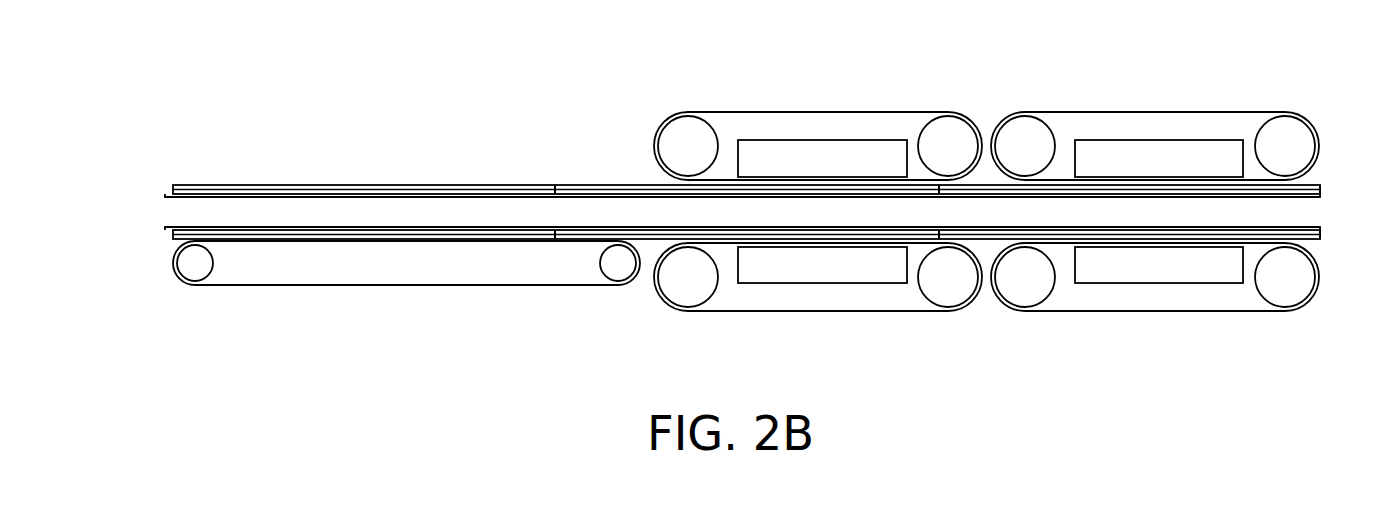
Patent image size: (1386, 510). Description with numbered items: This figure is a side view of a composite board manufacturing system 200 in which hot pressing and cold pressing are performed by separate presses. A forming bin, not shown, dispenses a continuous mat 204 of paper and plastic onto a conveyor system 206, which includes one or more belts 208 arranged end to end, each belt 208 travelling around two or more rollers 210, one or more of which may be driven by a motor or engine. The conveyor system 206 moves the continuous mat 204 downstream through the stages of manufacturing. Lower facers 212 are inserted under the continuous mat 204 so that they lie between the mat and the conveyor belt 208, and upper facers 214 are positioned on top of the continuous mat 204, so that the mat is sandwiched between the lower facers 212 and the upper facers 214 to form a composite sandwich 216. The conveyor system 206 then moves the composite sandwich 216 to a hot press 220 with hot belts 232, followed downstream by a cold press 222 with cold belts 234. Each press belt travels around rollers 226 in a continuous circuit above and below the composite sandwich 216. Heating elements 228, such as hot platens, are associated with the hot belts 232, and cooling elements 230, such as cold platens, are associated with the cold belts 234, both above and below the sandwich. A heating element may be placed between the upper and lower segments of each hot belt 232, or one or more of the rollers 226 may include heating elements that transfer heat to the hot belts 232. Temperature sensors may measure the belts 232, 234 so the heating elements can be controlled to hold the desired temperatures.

The composite board manufacturing system 200 is at (222, 52).
The continuous mat 204 is at (168, 190).
The conveyor system 206 is at (220, 302).
The belt 208 is at (438, 285).
The roller 210 is at (205, 280).
The lower facer 212 is at (170, 246).
The upper facer 214 is at (330, 188).
The composite sandwich 216 is at (398, 143).
The hot press 220 is at (708, 58).
The cold press 222 is at (1059, 58).
The roller 226 is at (672, 117).
The heating element 228 is at (835, 140).
The cooling element 230 is at (1177, 140).
The hot belt 232 is at (838, 112).
The cold belt 234 is at (1218, 112).